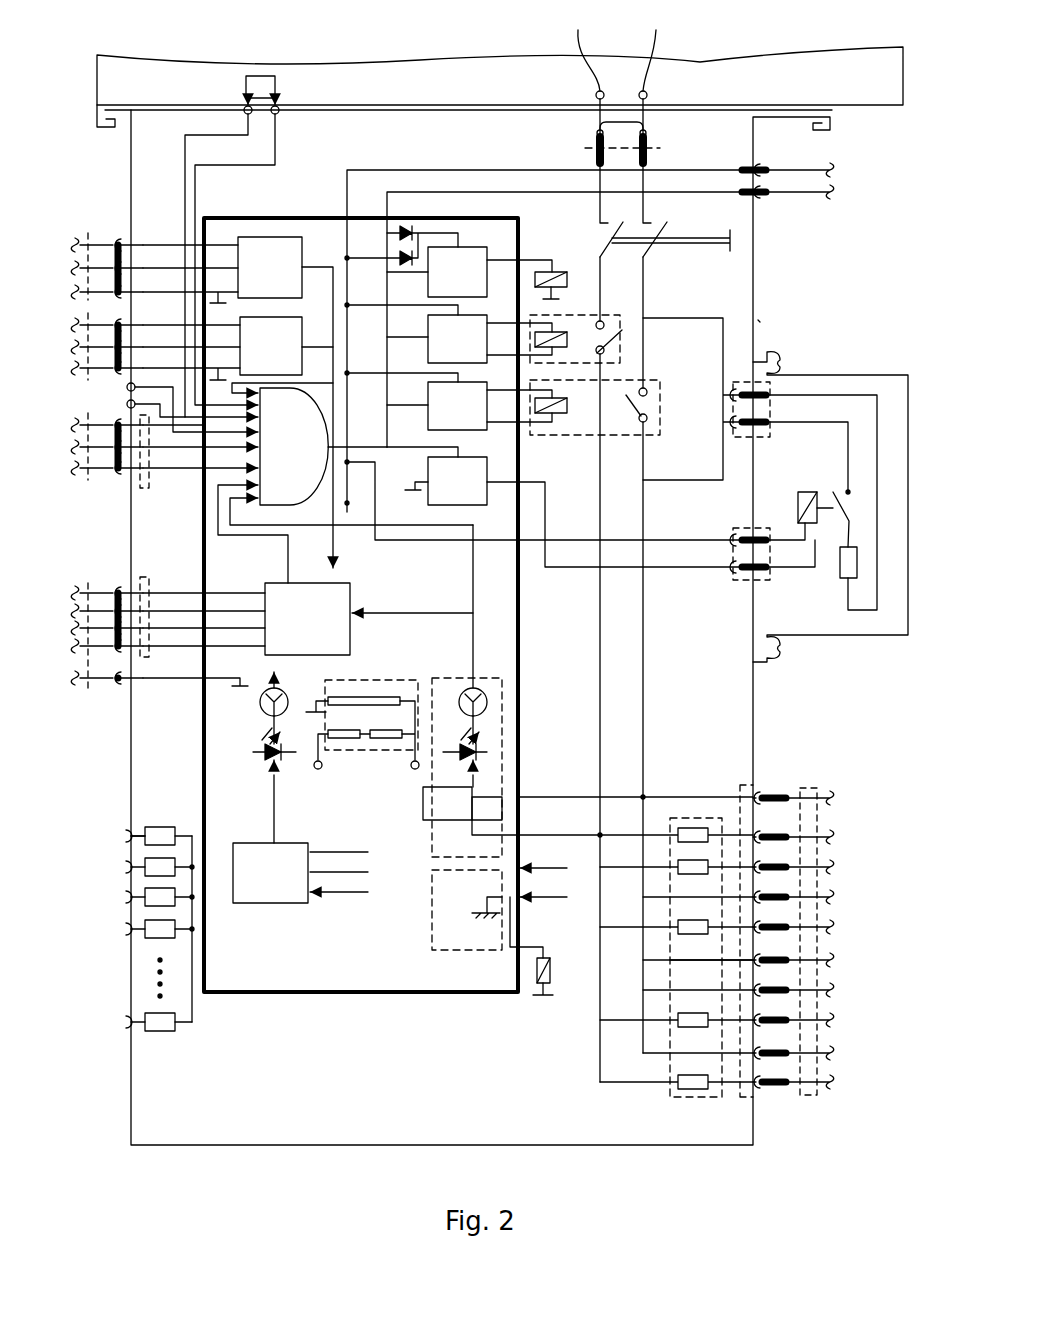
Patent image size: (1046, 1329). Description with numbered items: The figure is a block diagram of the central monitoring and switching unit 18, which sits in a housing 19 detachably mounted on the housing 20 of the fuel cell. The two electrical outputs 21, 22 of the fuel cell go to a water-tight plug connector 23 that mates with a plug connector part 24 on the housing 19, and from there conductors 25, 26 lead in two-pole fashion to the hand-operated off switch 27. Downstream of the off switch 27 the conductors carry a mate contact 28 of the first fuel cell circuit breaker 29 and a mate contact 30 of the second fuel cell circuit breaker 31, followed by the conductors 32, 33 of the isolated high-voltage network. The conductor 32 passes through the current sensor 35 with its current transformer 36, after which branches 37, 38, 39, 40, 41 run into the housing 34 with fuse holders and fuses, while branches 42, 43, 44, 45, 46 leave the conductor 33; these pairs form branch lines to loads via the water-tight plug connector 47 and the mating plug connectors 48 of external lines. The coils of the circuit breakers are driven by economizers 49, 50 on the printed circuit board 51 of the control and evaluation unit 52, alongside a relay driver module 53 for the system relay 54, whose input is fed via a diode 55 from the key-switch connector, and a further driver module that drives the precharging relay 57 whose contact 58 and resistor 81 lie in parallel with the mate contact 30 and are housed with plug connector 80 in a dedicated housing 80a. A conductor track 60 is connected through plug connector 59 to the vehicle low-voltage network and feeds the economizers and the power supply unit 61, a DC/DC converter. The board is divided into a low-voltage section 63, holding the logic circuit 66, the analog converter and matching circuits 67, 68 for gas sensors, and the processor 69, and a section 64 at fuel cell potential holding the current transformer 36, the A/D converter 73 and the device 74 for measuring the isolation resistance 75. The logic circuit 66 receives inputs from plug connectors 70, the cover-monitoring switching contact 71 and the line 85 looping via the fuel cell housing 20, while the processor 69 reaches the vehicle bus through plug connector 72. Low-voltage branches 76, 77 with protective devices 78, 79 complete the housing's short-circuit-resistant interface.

The central monitoring and switching unit 18 is at (775, 330).
The housing 19 is at (756, 283).
The fuel cell housing 20 is at (821, 72).
The positive electrical output 21 is at (579, 66).
The negative electrical output 22 is at (659, 66).
The plug connector 23 is at (650, 120).
The plug connector part 24 is at (668, 148).
The conductor 25 is at (600, 182).
The conductor 26 is at (648, 184).
The off switch 27 is at (657, 247).
The mate contact 28 is at (614, 320).
The first fuel cell circuit breaker 29 is at (578, 318).
The mate contact 30 is at (651, 398).
The second fuel cell circuit breaker 31 is at (651, 380).
The conductor 32 is at (597, 422).
The conductor 33 is at (647, 453).
The housing with fuse holders and fuses 34 is at (705, 1100).
The current sensor 35 is at (485, 680).
The current transformer 36 is at (511, 797).
The branch 37 is at (619, 832).
The branch 38 is at (605, 870).
The branch 39 is at (605, 930).
The branch 40 is at (605, 1023).
The branch 41 is at (605, 1085).
The branch 42 is at (673, 783).
The branch 43 is at (672, 882).
The branch 44 is at (672, 944).
The branch 45 is at (672, 973).
The branch 46 is at (672, 1038).
The plug connector 47 is at (742, 785).
The plug connectors 48 is at (832, 850).
The economizer 49 is at (449, 334).
The economizer 50 is at (449, 401).
The printed circuit board 51 is at (493, 593).
The control and evaluation unit 52 is at (528, 657).
The relay driver module 53 is at (469, 268).
The relay 54 is at (563, 270).
The diode 55 is at (404, 229).
The relay 57 is at (808, 490).
The contact 58 is at (851, 508).
The plug connector 59 is at (746, 166).
The conductor track 60 is at (349, 232).
The power supply unit 61 is at (378, 680).
The section 63 is at (467, 745).
The section 64 is at (356, 945).
The logic circuit 66 is at (304, 485).
The analog converter and matching circuit 67 is at (294, 250).
The analog converter and matching circuit 68 is at (293, 337).
The processor 69 is at (341, 600).
The plug connectors 70 is at (151, 492).
The switching contact 71 is at (126, 389).
The plug connector 72 is at (151, 667).
The A/D converter 73 is at (286, 906).
The isolation resistance measuring device 74 is at (430, 925).
The isolation resistance 75 is at (549, 970).
The branch 76 is at (188, 832).
The branch 77 is at (192, 1026).
The protective device 78 is at (160, 825).
The protective device 79 is at (160, 1035).
The plug connector 80 is at (762, 440).
The dedicated housing 80a is at (825, 622).
The resistor 81 is at (842, 566).
The line 85 is at (277, 80).